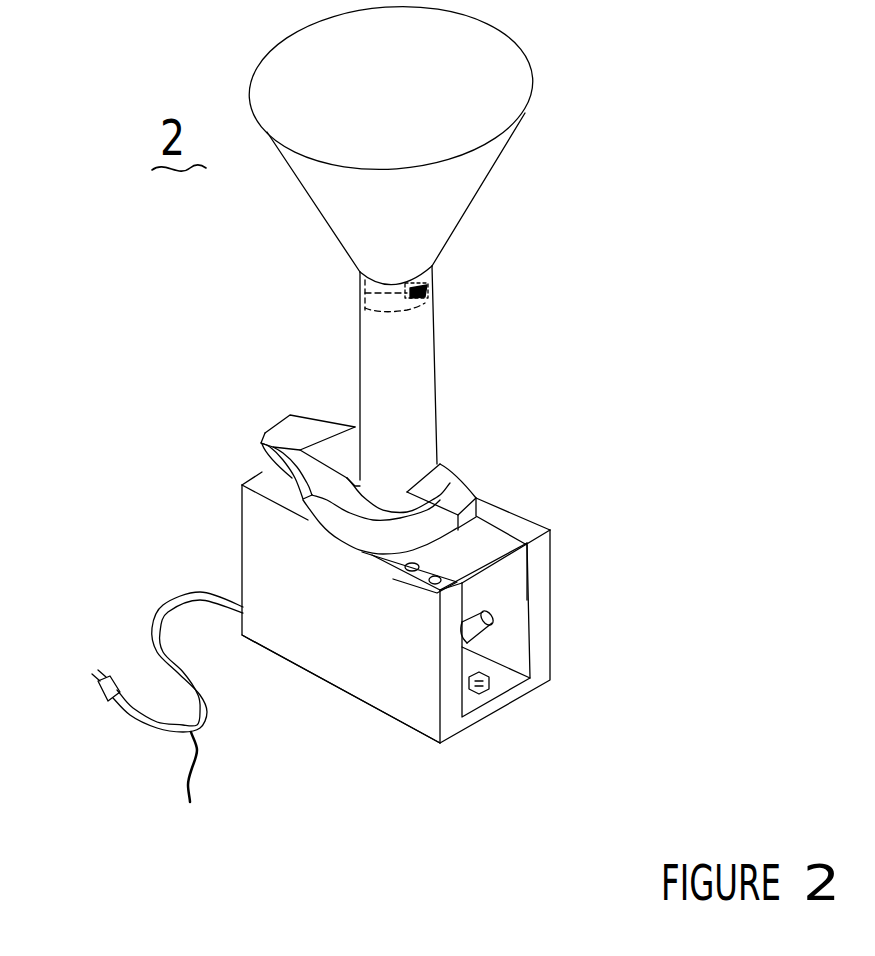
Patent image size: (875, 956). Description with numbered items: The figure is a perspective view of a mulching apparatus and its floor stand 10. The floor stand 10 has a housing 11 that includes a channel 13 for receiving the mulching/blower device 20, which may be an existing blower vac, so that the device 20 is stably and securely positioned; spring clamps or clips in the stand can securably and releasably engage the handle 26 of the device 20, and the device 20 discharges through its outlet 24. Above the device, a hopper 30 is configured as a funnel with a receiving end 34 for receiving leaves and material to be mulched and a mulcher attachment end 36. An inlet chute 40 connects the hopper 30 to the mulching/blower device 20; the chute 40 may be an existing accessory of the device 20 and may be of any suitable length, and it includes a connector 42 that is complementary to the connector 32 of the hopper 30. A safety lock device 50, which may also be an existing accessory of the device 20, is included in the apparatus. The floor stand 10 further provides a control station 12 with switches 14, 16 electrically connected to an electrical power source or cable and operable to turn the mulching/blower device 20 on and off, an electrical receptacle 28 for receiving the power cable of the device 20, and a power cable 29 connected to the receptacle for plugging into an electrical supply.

The floor stand 10 is at (540, 560).
The housing 11 is at (443, 712).
The control station 12 is at (460, 584).
The channel 13 is at (503, 620).
The switch 14 is at (410, 568).
The switch 16 is at (433, 580).
The mulching/blower device 20 is at (325, 477).
The outlet 24 is at (260, 446).
The handle 26 is at (480, 693).
The electrical receptacle 28 is at (473, 625).
The power cable 29 is at (167, 715).
The hopper 30 is at (453, 197).
The connector 32 is at (366, 292).
The receiving end 34 is at (254, 79).
The mulcher attachment end 36 is at (385, 312).
The inlet chute 40 is at (415, 373).
The connector 42 is at (430, 290).
The safety lock device 50 is at (456, 500).